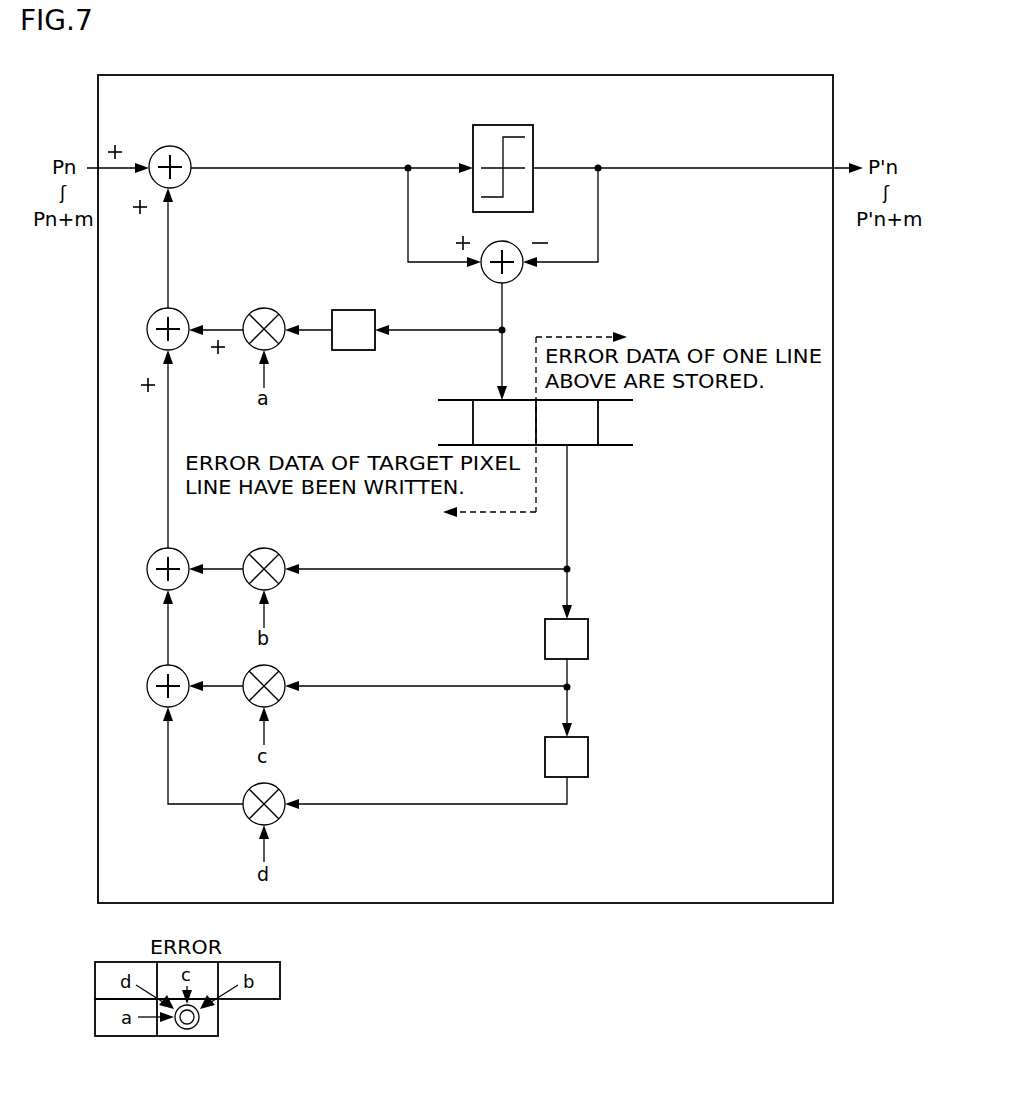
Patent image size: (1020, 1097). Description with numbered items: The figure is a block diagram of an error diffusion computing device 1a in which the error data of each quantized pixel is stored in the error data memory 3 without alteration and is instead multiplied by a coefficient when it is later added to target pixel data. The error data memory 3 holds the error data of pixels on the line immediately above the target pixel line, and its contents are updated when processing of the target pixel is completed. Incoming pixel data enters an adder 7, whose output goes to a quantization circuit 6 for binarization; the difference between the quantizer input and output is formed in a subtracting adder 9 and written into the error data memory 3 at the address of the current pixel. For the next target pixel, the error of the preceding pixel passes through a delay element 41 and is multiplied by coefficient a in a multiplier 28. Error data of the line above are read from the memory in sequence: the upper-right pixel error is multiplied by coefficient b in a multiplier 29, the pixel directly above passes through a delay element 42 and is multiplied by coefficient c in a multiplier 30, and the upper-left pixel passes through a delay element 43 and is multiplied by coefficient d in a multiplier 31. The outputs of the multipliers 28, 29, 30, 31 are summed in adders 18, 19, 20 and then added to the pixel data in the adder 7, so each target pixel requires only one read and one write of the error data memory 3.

The error diffusion computing device 1a is at (833, 98).
The error data memory 3 is at (807, 395).
The quantization circuit 6 is at (533, 157).
The adder 7 is at (186, 152).
The subtractor (error calculator) 9 is at (517, 277).
The adder 18 is at (183, 313).
The adder 19 is at (183, 553).
The adder 20 is at (183, 670).
The multiplier 28 is at (279, 313).
The multiplier 29 is at (279, 553).
The multiplier 30 is at (279, 670).
The multiplier 31 is at (279, 788).
The delay element 41 is at (341, 310).
The delay element 42 is at (588, 640).
The delay element 43 is at (588, 758).